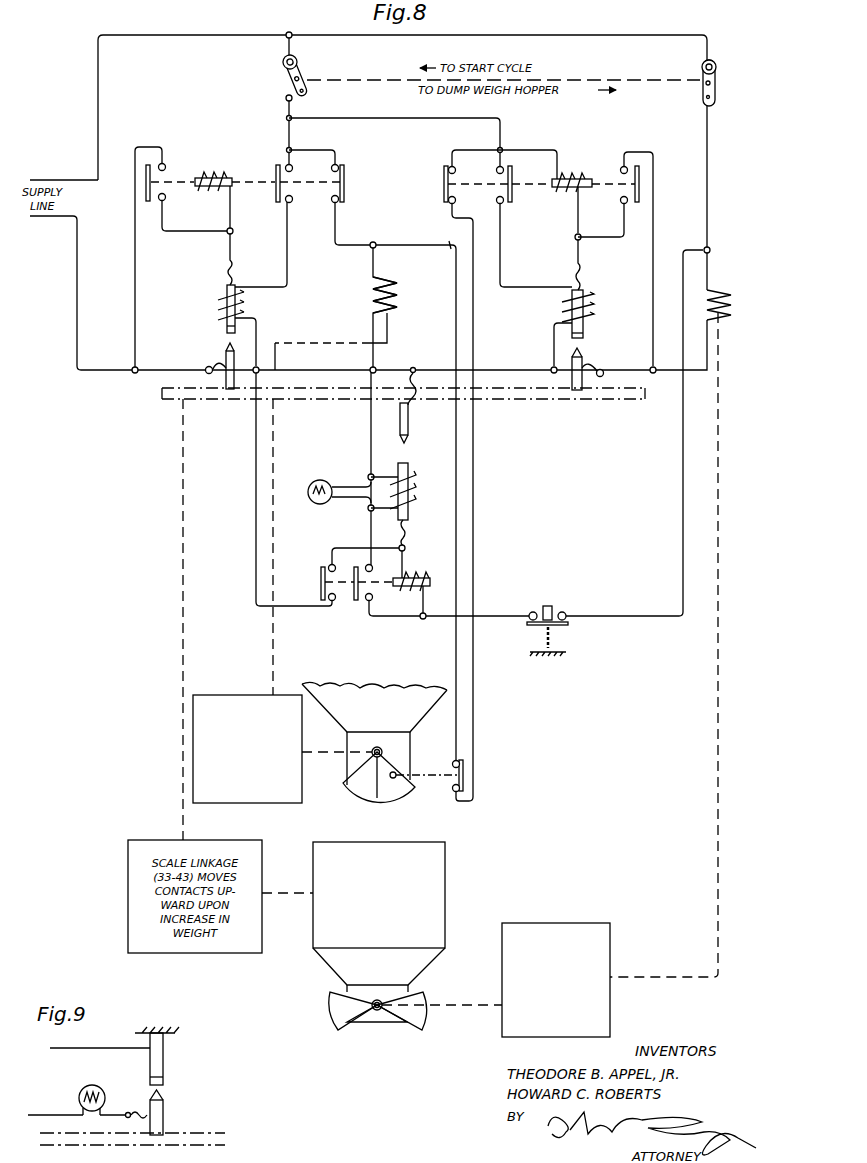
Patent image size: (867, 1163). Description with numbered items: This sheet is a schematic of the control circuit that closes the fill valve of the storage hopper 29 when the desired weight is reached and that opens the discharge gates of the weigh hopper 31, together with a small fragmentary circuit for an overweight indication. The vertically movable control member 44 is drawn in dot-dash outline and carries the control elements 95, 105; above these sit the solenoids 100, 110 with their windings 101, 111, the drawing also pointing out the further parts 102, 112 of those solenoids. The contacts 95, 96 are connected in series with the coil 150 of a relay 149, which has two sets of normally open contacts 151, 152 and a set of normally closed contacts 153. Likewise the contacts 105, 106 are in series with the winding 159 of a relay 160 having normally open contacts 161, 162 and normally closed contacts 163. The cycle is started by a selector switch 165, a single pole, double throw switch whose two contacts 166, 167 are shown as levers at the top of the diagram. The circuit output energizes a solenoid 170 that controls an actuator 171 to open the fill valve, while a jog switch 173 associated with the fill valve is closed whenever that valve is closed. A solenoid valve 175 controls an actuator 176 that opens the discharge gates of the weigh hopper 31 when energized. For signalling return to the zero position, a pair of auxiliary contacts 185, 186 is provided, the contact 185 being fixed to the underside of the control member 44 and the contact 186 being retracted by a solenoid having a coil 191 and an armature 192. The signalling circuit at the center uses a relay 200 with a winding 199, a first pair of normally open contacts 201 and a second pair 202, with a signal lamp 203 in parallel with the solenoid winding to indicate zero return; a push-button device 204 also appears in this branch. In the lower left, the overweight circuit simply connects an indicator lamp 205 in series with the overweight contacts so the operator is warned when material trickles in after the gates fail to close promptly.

In FIG. 8, the contact 166 is at (297, 62).
In FIG. 8, the selector switch 165 is at (340, 80).
In FIG. 8, the contact 167 is at (702, 67).
In FIG. 8, the normally open contacts 152 is at (164, 165).
In FIG. 8, the relay 149 is at (240, 178).
In FIG. 8, the coil 150 is at (205, 188).
In FIG. 8, the normally open contacts 151 is at (293, 197).
In FIG. 8, the normally closed contacts 153 is at (332, 169).
In FIG. 8, the normally open contacts 161 is at (496, 173).
In FIG. 8, the normally closed contacts 163 is at (456, 201).
In FIG. 8, the winding 159 is at (562, 189).
In FIG. 8, the relay 160 is at (582, 173).
In FIG. 8, the normally open contacts 162 is at (621, 202).
In FIG. 8, the winding 101 is at (223, 292).
In FIG. 8, the solenoid 100 is at (218, 313).
In FIG. 8, the solenoid coil end 102 is at (226, 330).
In FIG. 8, the contact 96 is at (224, 341).
In FIG. 8, the control element 95 is at (233, 357).
In FIG. 8, the solenoid 110 is at (588, 298).
In FIG. 8, the winding 111 is at (586, 307).
In FIG. 8, the solenoid winding 112 is at (585, 319).
In FIG. 8, the contact 106 is at (584, 337).
In FIG. 8, the control element 105 is at (584, 362).
In FIG. 8, the solenoid 170 is at (398, 296).
In FIG. 8, the solenoid valve 175 is at (733, 299).
In FIG. 8, the control member 44 is at (305, 403).
In FIG. 8, the auxiliary control element 185 is at (410, 426).
In FIG. 8, the auxiliary control element 186 is at (409, 467).
In FIG. 8, the armature 192 is at (412, 481).
In FIG. 8, the coil 191 is at (412, 505).
In FIG. 8, the signal lamp 203 is at (319, 481).
In FIG. 8, the normally open contacts 202 is at (336, 571).
In FIG. 8, the relay 200 is at (418, 575).
In FIG. 8, the winding 199 is at (425, 578).
In FIG. 8, the normally open contacts 201 is at (373, 599).
In FIG. 8, the push button switch 204 is at (563, 613).
In FIG. 8, the actuator 171 is at (220, 694).
In FIG. 8, the storage hopper 29 is at (414, 686).
In FIG. 8, the jog switch 173 is at (452, 791).
In FIG. 8, the weigh hopper 31 is at (445, 882).
In FIG. 8, the actuator 176 is at (590, 923).
In FIG. 9, the indicator lamp 205 is at (103, 1089).